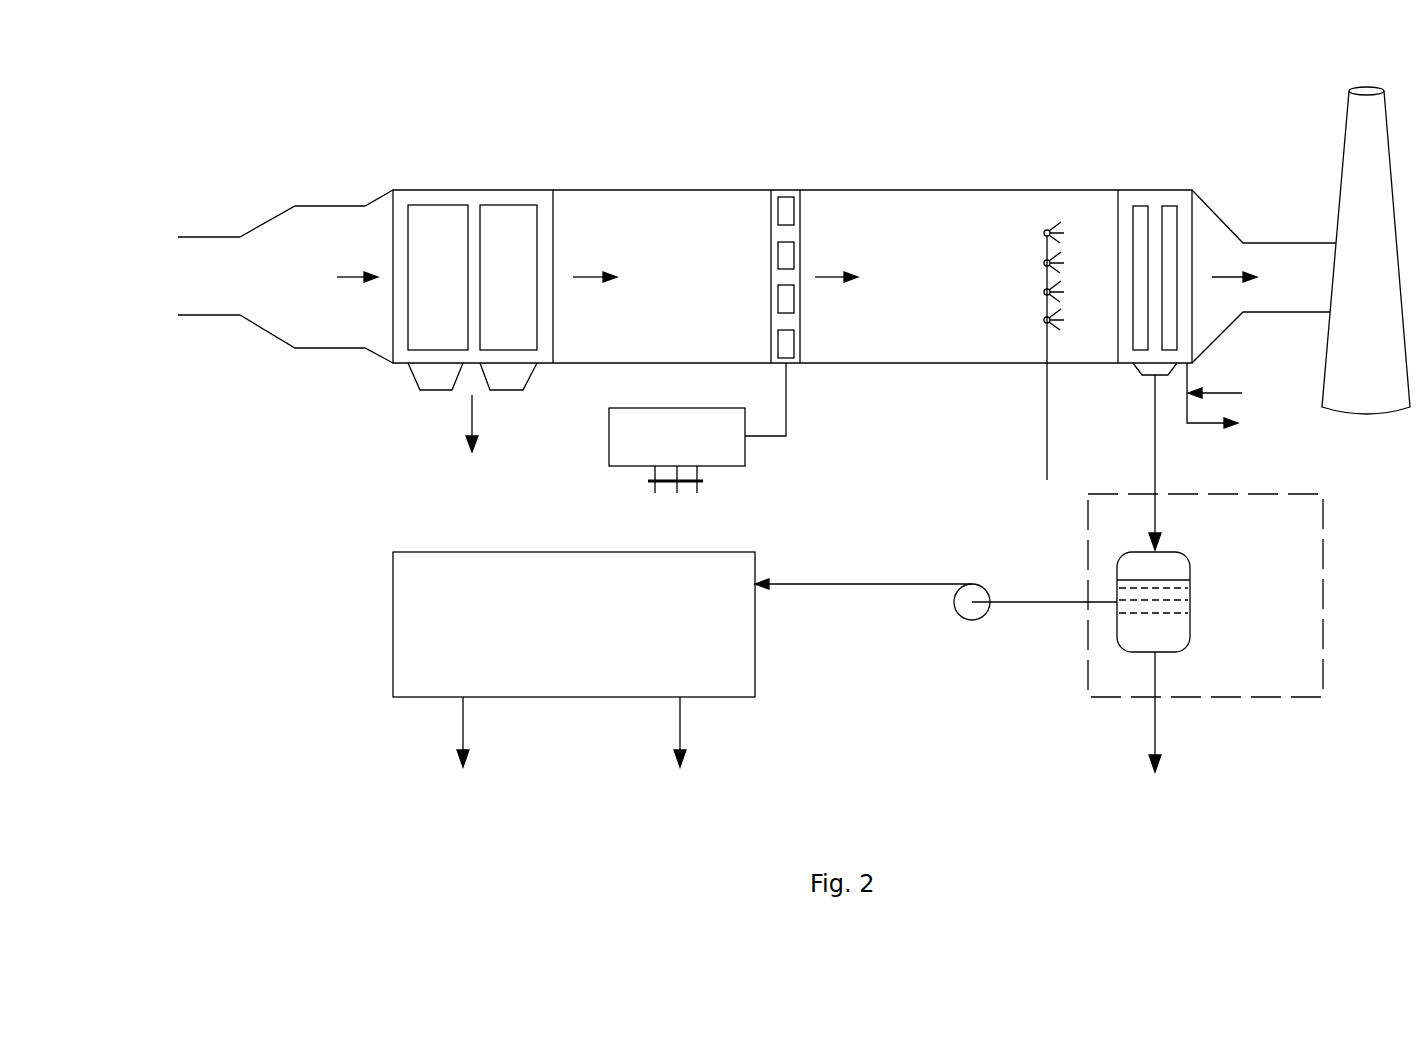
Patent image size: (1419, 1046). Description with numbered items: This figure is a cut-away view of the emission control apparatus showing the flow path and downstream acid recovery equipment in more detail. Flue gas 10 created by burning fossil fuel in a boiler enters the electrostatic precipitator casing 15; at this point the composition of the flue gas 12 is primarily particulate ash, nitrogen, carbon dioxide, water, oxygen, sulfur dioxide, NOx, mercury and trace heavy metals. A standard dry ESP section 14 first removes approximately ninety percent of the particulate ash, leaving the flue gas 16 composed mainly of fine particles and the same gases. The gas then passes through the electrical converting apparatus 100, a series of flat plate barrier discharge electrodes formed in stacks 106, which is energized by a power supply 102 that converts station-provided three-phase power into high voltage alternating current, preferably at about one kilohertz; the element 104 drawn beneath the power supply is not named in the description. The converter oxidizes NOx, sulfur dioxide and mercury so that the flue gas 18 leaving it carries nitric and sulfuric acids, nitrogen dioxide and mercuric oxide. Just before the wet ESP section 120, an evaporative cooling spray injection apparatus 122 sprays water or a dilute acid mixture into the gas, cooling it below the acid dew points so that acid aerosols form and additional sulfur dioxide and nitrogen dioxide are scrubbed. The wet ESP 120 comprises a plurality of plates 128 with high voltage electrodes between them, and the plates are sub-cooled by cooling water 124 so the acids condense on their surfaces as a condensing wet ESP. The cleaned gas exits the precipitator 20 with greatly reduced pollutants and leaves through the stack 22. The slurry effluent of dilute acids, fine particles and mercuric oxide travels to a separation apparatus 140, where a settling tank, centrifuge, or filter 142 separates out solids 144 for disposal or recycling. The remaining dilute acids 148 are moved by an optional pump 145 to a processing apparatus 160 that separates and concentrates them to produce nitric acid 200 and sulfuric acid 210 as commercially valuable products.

The flue gas 10 is at (224, 289).
The flue gas composition before the dry ESP 12 is at (301, 289).
The dry ESP section 14 is at (493, 205).
The electrostatic precipitator casing 15 is at (972, 363).
The flue gas composition after the dry ESP 16 is at (696, 289).
The flue gas composition after the electrical converter 18 is at (958, 289).
The precipitator exit 20 is at (1311, 289).
The stack 22 is at (1366, 250).
The electrical converting apparatus 100 is at (780, 241).
The power supply 102 is at (723, 447).
The ground 104 is at (668, 498).
The electrode stacks 106 is at (788, 253).
The wet ESP section 120 is at (1124, 248).
The evaporative cooling spray injection apparatus 122 is at (1043, 280).
The cooling water 124 is at (1245, 395).
The wet ESP plates 128 is at (1172, 217).
The separation apparatus 140 is at (1253, 536).
The settling tank, centrifuge, or filter 142 is at (1163, 600).
The solids 144 is at (1155, 743).
The pump 145 is at (977, 613).
The dilute acids 148 is at (857, 584).
The processing apparatus 160 is at (586, 631).
The nitric acid product 200 is at (463, 765).
The sulfuric acid product 210 is at (680, 765).